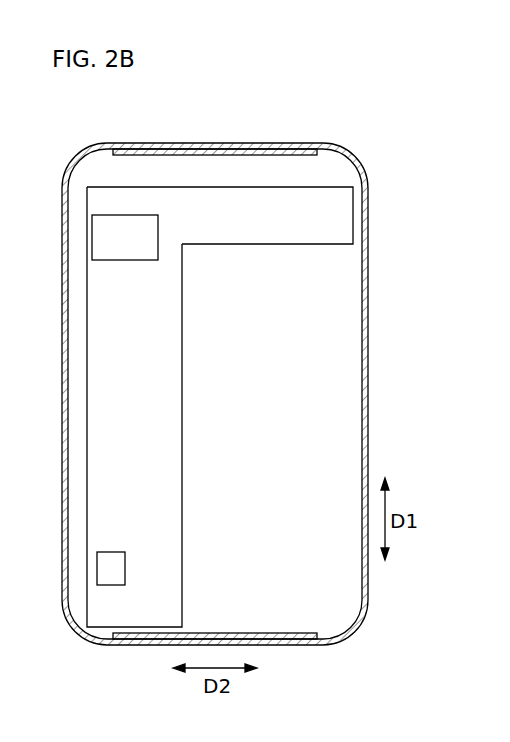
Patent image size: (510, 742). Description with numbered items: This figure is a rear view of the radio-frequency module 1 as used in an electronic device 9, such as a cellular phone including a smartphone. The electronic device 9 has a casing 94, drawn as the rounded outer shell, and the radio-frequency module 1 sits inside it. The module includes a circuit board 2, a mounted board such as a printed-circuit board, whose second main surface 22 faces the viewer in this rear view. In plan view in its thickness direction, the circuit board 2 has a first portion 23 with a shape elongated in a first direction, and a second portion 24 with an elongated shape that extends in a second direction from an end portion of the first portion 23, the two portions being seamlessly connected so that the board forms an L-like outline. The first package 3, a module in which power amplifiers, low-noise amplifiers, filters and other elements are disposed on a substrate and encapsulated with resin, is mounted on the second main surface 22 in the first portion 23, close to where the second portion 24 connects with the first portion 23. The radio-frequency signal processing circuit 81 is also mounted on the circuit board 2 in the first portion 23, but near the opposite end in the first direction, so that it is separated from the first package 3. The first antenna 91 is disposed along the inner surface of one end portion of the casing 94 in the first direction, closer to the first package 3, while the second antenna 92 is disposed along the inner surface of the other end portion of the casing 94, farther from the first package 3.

The electronic device 9 is at (232, 376).
The casing 94 is at (368, 198).
The first antenna 91 is at (219, 151).
The second antenna 92 is at (255, 635).
The radio-frequency module 1 is at (234, 385).
The circuit board 2 is at (220, 407).
The second main surface 22 is at (160, 463).
The first portion 23 is at (168, 333).
The second portion 24 is at (270, 235).
The first package 3 is at (130, 255).
The radio-frequency signal processing circuit 81 is at (120, 570).